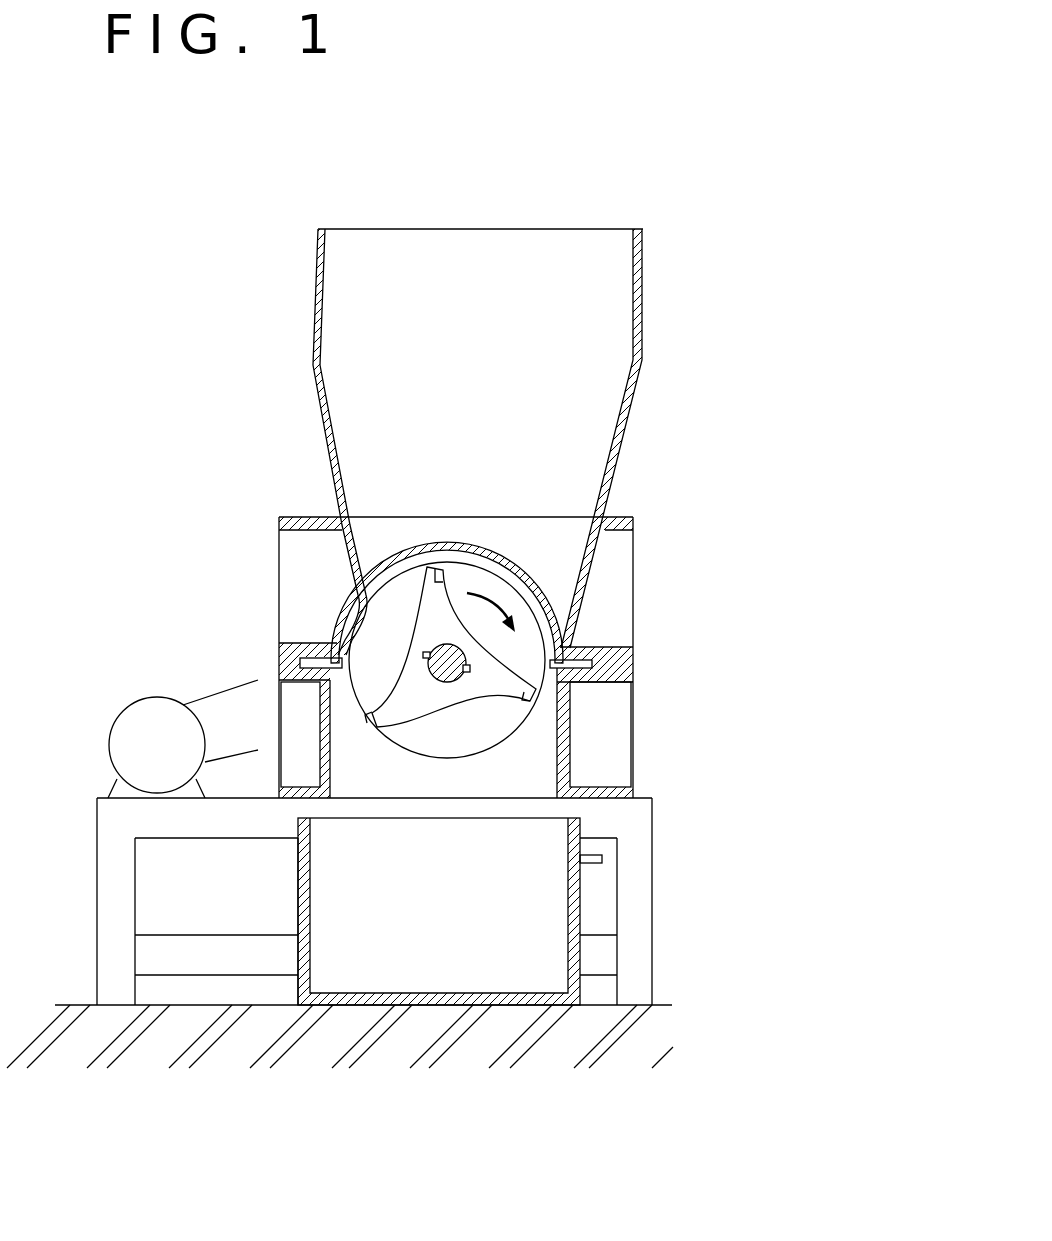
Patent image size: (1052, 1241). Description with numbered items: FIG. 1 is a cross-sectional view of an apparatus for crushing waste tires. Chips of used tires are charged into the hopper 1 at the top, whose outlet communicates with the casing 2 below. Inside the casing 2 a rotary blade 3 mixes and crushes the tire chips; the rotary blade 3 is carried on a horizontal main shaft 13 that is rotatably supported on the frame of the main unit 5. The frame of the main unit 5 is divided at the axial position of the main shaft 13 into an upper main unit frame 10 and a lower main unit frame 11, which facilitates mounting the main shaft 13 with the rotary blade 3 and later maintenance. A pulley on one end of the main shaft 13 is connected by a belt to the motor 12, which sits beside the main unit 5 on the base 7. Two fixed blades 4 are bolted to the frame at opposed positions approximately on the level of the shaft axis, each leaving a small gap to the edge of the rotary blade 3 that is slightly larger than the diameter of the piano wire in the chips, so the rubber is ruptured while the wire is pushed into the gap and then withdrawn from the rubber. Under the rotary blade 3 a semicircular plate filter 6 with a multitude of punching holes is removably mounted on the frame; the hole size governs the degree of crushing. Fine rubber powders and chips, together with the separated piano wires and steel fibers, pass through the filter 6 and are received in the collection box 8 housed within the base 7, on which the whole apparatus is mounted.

The hopper 1 is at (643, 317).
The casing 2 is at (552, 598).
The rotary blade 3 is at (515, 667).
The fixed blade 4 is at (702, 683).
The main unit 5 is at (648, 747).
The filter 6 is at (535, 715).
The base 7 is at (650, 867).
The collection box 8 is at (582, 922).
The upper main unit frame 10 is at (278, 555).
The lower main unit frame 11 is at (277, 727).
The motor 12 is at (123, 707).
The main shaft 13 is at (435, 647).